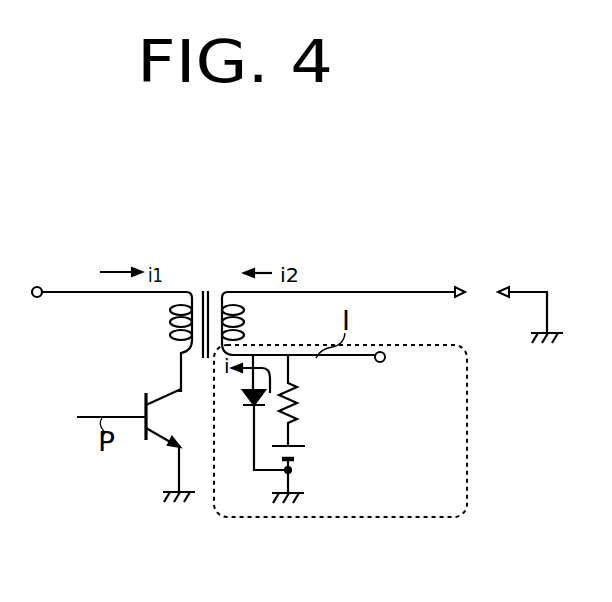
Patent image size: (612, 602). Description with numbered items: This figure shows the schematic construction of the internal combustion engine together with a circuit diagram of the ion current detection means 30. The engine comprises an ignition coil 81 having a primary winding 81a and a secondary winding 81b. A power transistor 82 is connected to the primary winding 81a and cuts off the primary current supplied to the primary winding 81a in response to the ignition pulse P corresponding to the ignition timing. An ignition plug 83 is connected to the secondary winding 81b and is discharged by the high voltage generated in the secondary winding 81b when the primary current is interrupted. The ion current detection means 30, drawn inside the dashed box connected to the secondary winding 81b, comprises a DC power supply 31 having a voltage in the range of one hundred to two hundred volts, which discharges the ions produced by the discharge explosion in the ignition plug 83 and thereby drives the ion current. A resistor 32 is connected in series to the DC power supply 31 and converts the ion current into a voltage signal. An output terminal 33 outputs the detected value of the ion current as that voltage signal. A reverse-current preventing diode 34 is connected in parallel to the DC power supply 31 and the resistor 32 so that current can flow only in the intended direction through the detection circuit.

The ignition coil 81 is at (204, 286).
The primary winding 81a is at (172, 323).
The secondary winding 81b is at (245, 320).
The power transistor 82 is at (144, 405).
The ignition plug 83 is at (481, 288).
The ion current detection means 30 is at (298, 519).
The DC power supply 31 is at (295, 459).
The resistor 32 is at (298, 406).
The output terminal 33 is at (386, 358).
The reverse-current preventing diode 34 is at (241, 398).